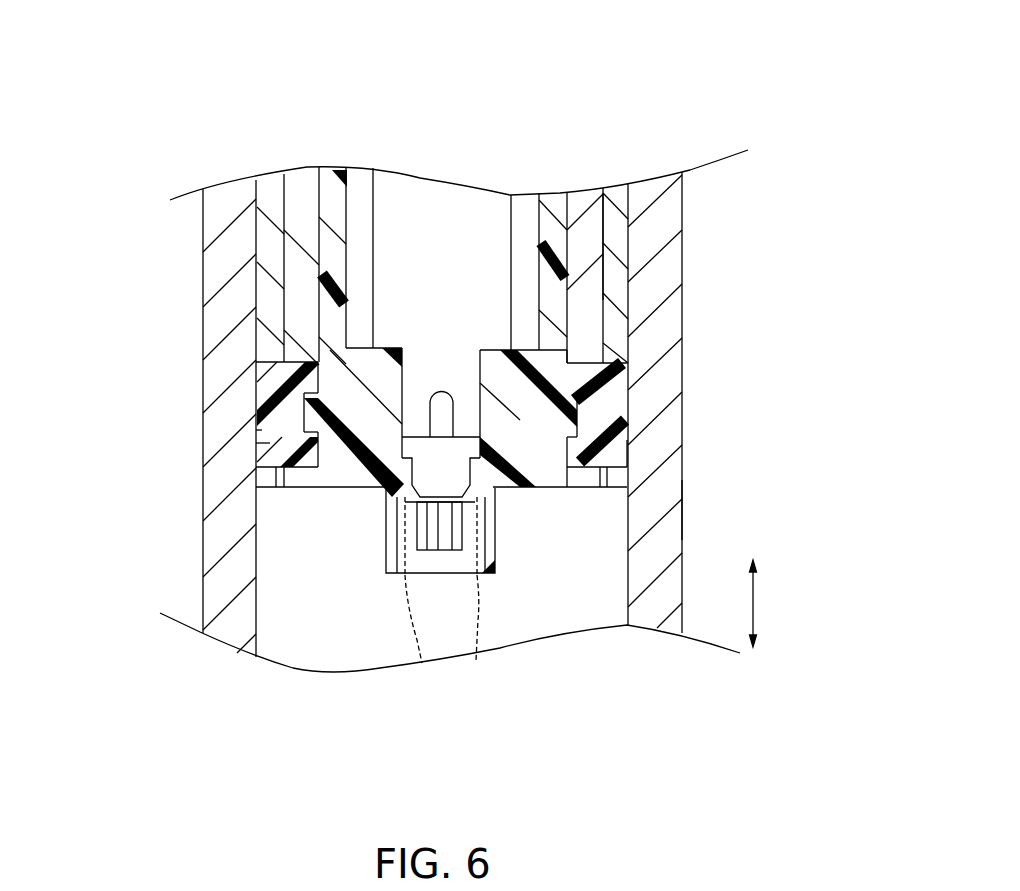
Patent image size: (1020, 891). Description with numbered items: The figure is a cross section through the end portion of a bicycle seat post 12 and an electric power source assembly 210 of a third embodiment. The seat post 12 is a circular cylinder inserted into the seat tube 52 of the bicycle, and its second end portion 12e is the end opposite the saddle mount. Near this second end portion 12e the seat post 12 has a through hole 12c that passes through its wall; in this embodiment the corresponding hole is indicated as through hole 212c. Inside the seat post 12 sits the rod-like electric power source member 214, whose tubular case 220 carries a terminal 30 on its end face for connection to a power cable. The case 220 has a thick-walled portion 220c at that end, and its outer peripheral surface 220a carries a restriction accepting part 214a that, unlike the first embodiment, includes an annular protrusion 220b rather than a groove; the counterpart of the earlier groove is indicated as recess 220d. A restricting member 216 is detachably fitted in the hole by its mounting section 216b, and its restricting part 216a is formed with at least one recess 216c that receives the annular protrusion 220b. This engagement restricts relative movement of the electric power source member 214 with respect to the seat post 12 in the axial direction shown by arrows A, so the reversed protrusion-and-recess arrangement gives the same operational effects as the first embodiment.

The seat post 12 is at (650, 239).
The through hole 12c is at (280, 447).
The second end portion 12e is at (275, 487).
The terminal 30 is at (437, 543).
The seat tube 52 is at (680, 508).
The electric power source assembly 210 is at (481, 147).
The through hole 212c is at (608, 475).
The electric power source member 214 is at (301, 176).
The restriction accepting part 214a is at (628, 427).
The restricting member 216 is at (238, 390).
The restricting part 216a is at (348, 400).
The mounting section 216b is at (253, 560).
The recess 216c is at (307, 423).
The case 220 is at (300, 250).
The outer peripheral surface 220a is at (567, 318).
The annular protrusion 220b is at (257, 428).
The thick-walled portion 220c is at (361, 365).
The recess 220d is at (640, 448).
The arrows indicating axial direction A is at (757, 600).